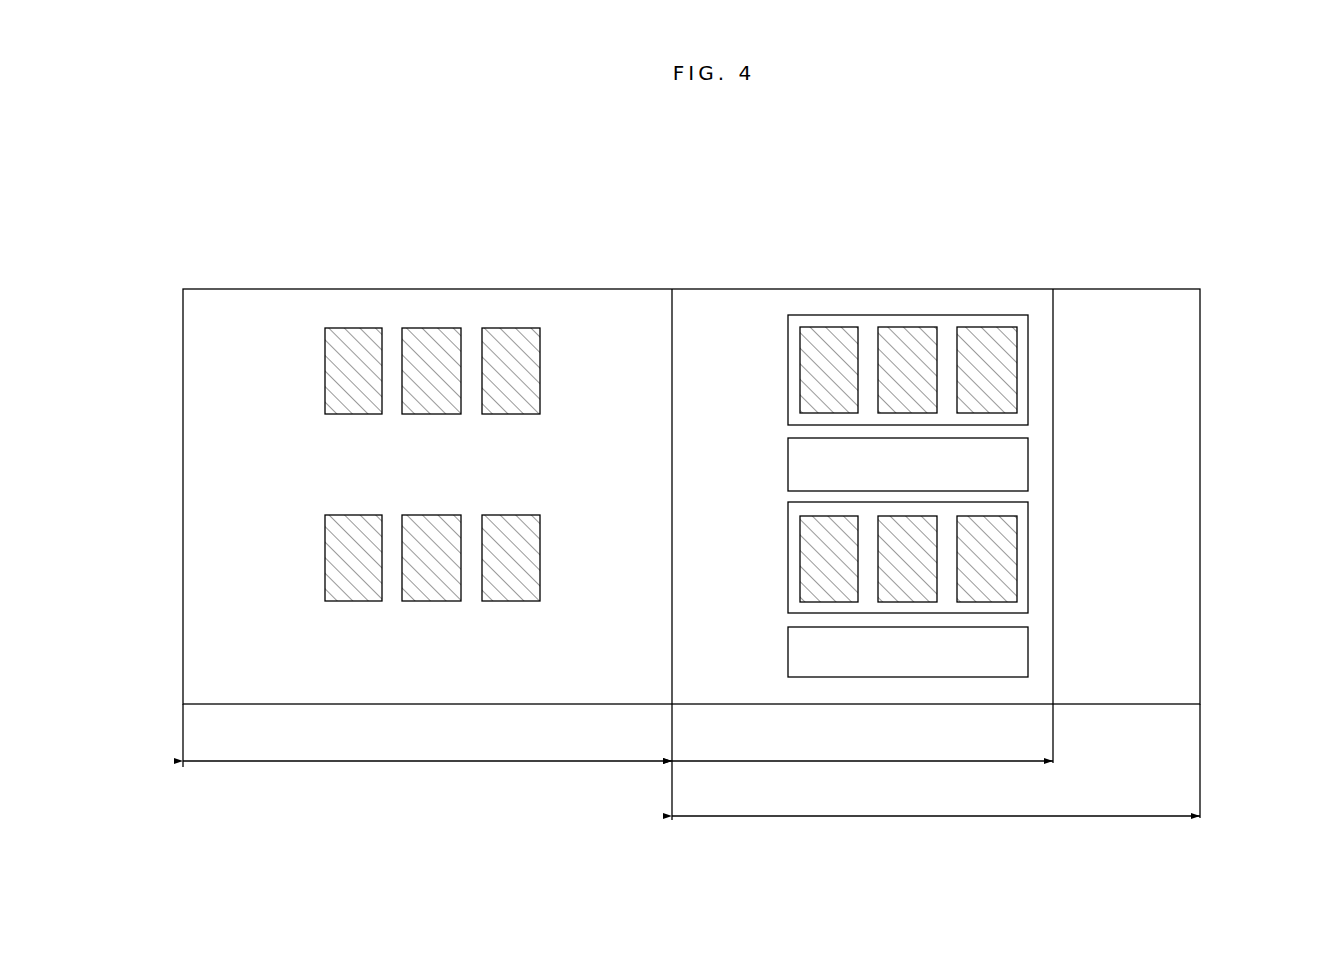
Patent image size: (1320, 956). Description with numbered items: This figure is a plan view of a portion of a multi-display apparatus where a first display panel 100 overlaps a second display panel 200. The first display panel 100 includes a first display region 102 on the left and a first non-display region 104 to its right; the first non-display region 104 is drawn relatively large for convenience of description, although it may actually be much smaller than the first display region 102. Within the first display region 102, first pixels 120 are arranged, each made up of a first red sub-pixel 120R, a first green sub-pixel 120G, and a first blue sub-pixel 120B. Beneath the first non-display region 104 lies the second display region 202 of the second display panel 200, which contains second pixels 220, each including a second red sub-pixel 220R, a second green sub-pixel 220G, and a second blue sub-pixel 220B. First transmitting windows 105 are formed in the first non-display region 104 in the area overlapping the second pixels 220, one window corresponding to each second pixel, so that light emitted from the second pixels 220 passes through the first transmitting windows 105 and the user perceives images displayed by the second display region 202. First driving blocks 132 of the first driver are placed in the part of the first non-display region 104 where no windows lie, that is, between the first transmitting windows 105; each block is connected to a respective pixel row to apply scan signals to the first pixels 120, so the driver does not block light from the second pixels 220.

The first display panel 100 is at (183, 493).
The first display region 102 is at (427, 748).
The first non-display region 104 is at (862, 541).
The first transmitting windows 105 is at (1028, 384).
The first pixels 120 is at (432, 398).
The first red sub-pixel 120R is at (350, 328).
The first green sub-pixel 120G is at (430, 328).
The first blue sub-pixel 120B is at (511, 419).
The first driving blocks 132 is at (1028, 468).
The second display panel 200 is at (1200, 560).
The second display region 202 is at (936, 833).
The second pixels 220 is at (908, 398).
The second red sub-pixel 220R is at (825, 327).
The second green sub-pixel 220G is at (905, 327).
The second blue sub-pixel 220B is at (987, 420).